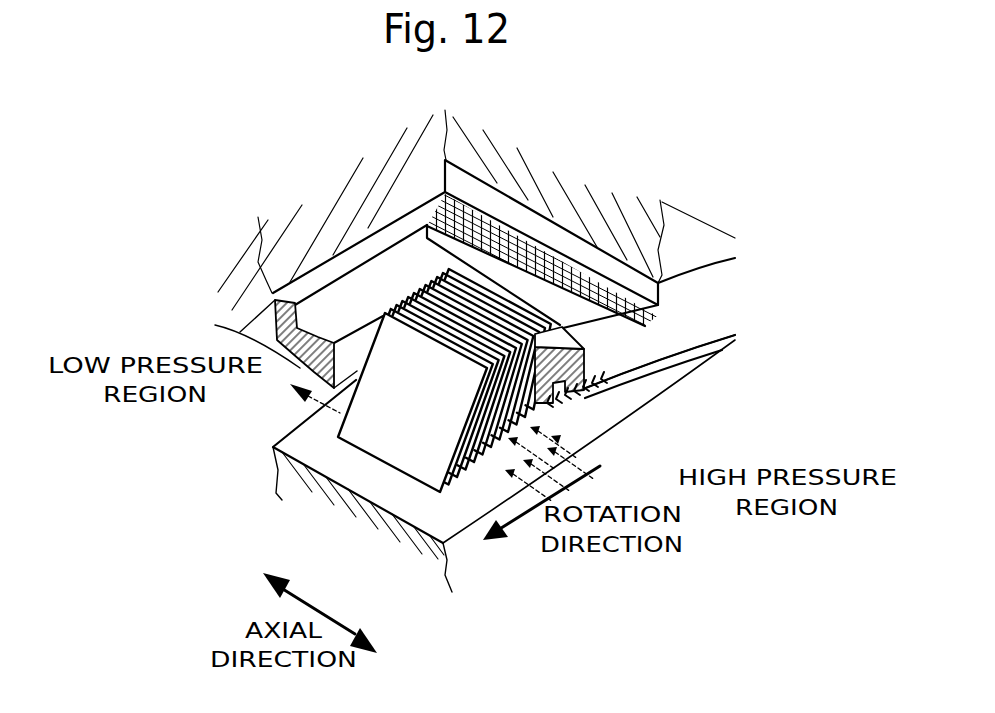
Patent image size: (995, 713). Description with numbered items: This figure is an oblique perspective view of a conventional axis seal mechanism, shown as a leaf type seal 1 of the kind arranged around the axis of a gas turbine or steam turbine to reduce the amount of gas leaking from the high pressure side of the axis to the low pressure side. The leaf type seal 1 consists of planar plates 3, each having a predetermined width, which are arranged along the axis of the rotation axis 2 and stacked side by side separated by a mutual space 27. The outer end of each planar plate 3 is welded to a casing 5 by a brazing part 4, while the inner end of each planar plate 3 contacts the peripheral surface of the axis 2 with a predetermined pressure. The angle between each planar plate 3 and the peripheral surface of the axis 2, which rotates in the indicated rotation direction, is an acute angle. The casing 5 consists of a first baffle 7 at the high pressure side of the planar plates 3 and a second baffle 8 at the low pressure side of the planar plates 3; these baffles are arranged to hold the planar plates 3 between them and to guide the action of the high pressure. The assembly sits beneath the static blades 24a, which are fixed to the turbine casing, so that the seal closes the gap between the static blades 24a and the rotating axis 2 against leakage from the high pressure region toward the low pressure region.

The leaf type seal 1 is at (358, 200).
The rotation axis 2 is at (400, 523).
The planar plates 3 is at (397, 345).
The brazing part 4 is at (445, 247).
The casing 5 is at (638, 350).
The first baffle 7 is at (592, 395).
The second baffle 8 is at (293, 372).
The static blades 24a is at (553, 198).
The mutual space 27 is at (477, 513).